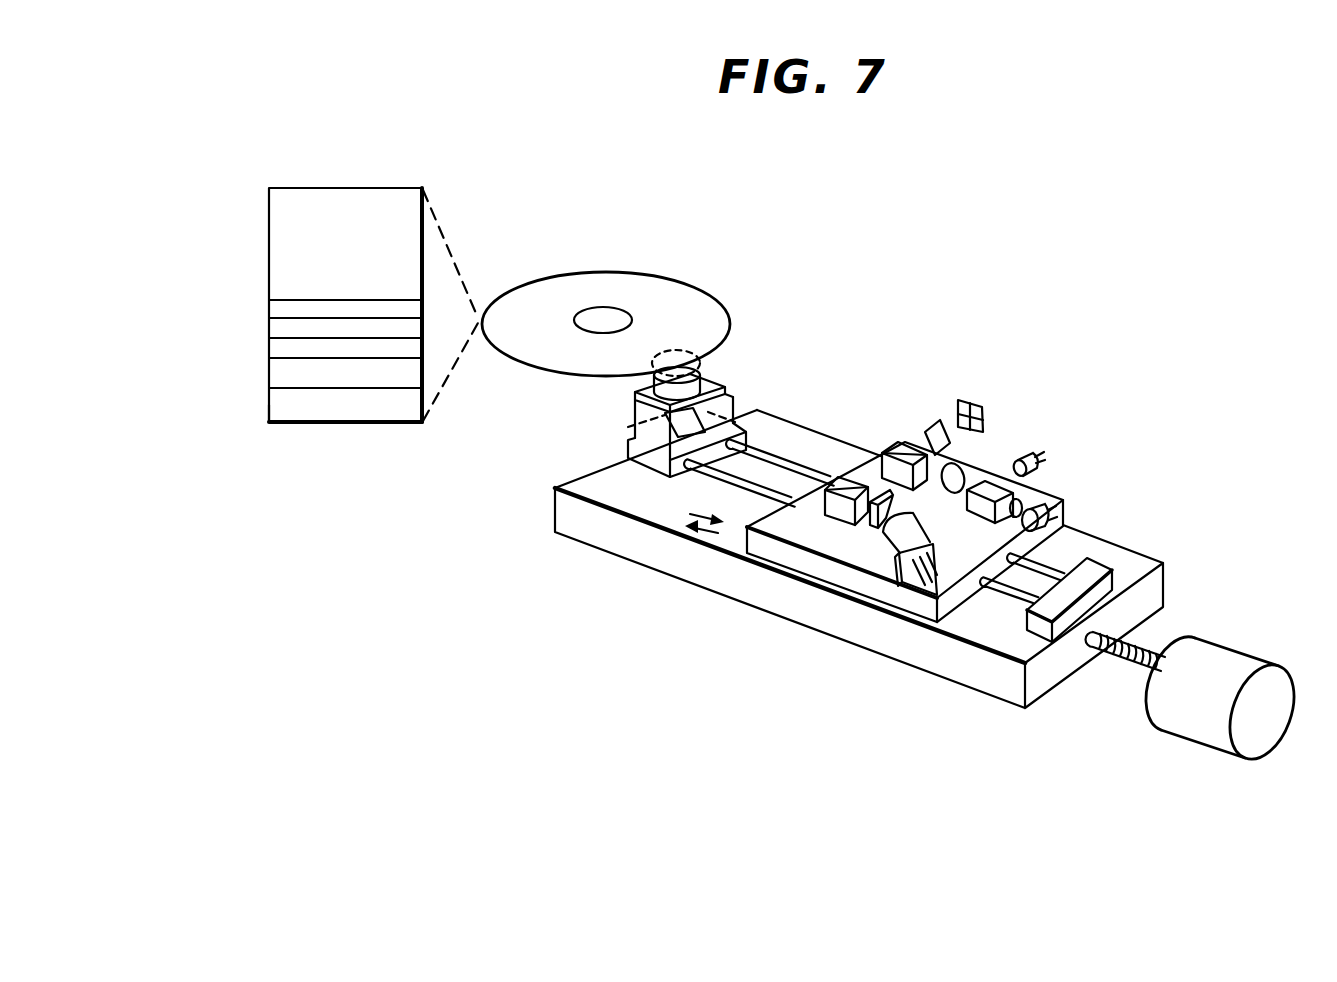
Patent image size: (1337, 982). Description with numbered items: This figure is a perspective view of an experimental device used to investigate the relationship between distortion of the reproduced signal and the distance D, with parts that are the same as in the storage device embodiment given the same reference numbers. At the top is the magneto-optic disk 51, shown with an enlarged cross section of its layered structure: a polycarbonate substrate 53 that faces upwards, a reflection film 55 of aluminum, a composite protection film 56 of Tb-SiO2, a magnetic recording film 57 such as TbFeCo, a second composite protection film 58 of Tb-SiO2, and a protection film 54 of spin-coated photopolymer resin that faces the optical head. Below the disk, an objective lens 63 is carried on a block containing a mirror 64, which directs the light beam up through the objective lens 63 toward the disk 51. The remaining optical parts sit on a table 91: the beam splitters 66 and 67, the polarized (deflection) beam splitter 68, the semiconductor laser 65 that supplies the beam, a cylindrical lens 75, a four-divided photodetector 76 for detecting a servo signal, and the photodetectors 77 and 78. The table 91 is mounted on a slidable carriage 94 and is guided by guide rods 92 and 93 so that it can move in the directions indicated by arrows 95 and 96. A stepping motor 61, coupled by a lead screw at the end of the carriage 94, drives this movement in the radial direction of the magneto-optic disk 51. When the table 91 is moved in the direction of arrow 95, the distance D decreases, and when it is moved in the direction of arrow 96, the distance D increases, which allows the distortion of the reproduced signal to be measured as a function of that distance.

The magneto-optic disk 51 is at (672, 278).
The substrate 53 is at (275, 260).
The protection film 54 is at (272, 423).
The reflection film 55 is at (278, 307).
The composite protection film 56 is at (275, 350).
The recording film 57 is at (275, 377).
The composite protection film 58 is at (275, 415).
The stepping motor 61 is at (1232, 646).
The objective lens 63 is at (703, 358).
The mirror 64 is at (657, 432).
The semiconductor laser 65 is at (928, 560).
The beam splitter 66 is at (840, 478).
The beam splitter 67 is at (888, 440).
The polarized beam splitter 68 is at (980, 480).
The cylindrical lens 75 is at (929, 418).
The four-divided photodetector 76 is at (978, 400).
The photodetector 77 is at (1040, 505).
The photodetector 78 is at (1028, 453).
The table 91 is at (783, 555).
The guide rod 92 is at (1052, 563).
The guide rod 93 is at (1013, 593).
The slidable carriage 94 is at (810, 618).
The arrow 95 is at (692, 537).
The arrow 96 is at (710, 507).